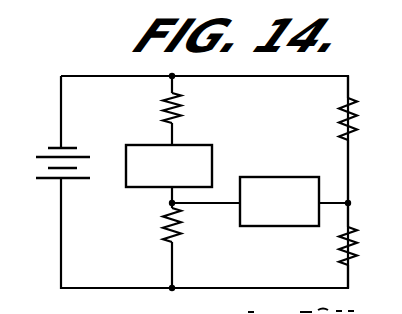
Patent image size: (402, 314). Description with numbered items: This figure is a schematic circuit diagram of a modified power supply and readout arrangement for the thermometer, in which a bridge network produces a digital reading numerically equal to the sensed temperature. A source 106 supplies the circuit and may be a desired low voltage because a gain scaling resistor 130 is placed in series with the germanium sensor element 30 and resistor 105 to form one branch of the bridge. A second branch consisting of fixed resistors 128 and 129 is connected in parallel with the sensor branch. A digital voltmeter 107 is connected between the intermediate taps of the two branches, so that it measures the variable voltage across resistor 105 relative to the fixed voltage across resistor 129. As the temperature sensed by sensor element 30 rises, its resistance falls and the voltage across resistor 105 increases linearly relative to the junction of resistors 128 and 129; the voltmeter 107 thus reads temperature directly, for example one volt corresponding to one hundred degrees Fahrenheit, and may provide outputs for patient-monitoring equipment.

The source 106 is at (50, 148).
The sensor element 30 is at (138, 145).
The gain scaling resistor 130 is at (180, 118).
The fixed resistor 128 is at (340, 118).
The digital voltmeter 107 is at (279, 201).
The resistor 105 is at (170, 231).
The fixed resistor 129 is at (343, 258).